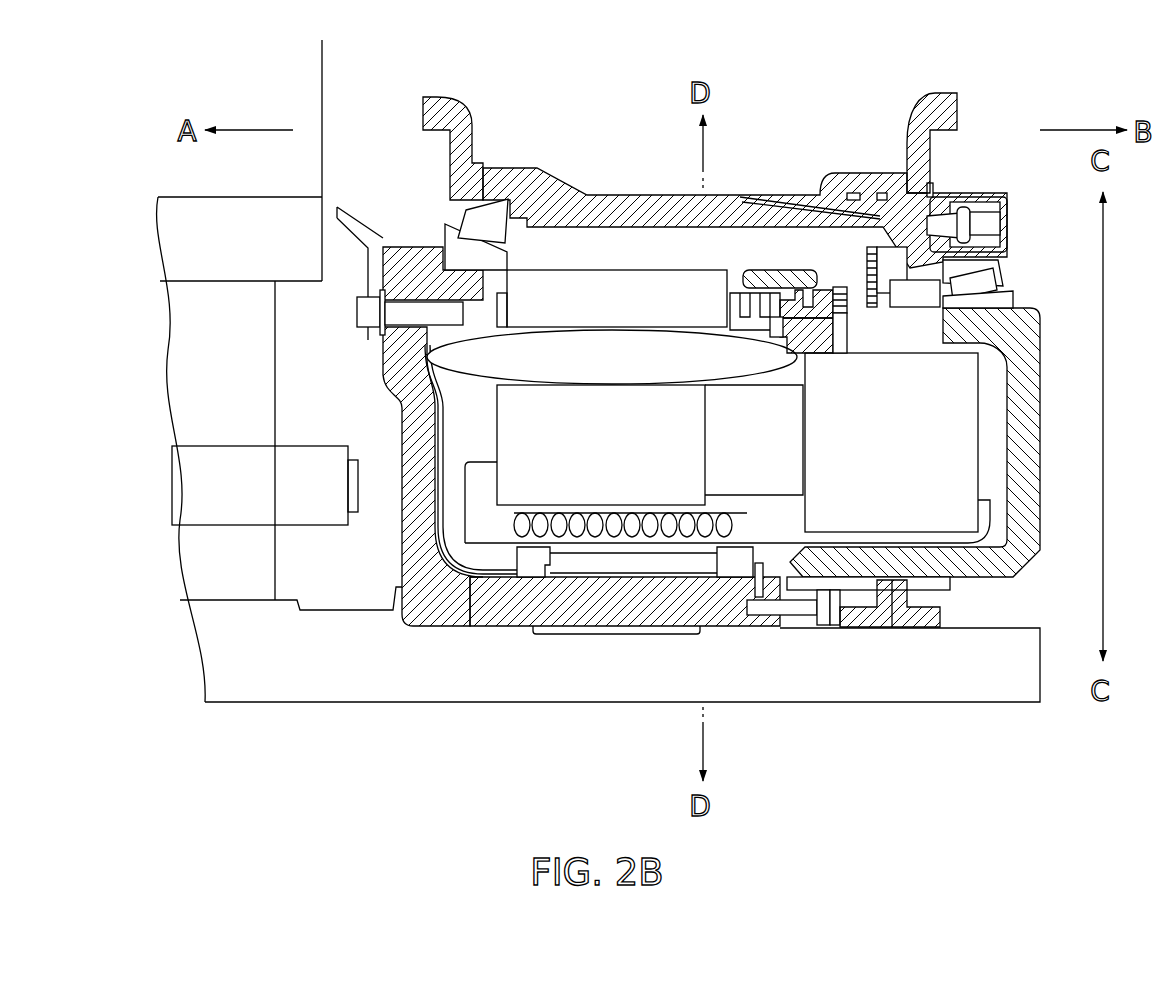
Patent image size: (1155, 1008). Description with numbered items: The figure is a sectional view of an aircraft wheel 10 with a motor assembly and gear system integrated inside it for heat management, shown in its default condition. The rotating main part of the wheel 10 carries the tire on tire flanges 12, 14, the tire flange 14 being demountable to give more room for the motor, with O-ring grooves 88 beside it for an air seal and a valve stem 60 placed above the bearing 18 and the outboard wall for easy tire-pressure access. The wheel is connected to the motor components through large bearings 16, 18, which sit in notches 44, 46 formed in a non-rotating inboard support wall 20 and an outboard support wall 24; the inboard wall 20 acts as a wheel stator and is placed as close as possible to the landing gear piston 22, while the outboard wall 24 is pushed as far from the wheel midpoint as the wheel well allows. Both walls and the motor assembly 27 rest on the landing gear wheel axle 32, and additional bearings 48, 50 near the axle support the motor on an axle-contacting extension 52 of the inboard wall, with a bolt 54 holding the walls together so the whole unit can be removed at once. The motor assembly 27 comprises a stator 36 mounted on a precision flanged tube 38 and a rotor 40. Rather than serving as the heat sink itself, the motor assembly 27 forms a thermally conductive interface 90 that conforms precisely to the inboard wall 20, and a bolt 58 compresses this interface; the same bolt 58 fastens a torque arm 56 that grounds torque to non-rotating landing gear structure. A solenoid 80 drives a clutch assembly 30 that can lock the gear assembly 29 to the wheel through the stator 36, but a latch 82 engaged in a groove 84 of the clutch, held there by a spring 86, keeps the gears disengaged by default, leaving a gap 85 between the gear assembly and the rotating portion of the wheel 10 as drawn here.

The wheel 10 is at (641, 182).
The tire flange 12 is at (436, 103).
The tire flange 14 is at (933, 108).
The bearing 16 is at (488, 232).
The bearing 18 is at (978, 282).
The inboard support wall 20 is at (412, 420).
The landing gear piston 22 is at (200, 388).
The outboard support wall 24 is at (1023, 464).
The motor assembly 27 is at (676, 260).
The gear assembly 29 is at (874, 466).
The clutch assembly 30 is at (846, 260).
The landing gear wheel axle 32 is at (333, 672).
The stator 36 is at (597, 369).
The flanged tube 38 is at (558, 292).
The rotor 40 is at (584, 462).
The notch 44 is at (467, 230).
The notch 46 is at (997, 290).
The bearing 48 is at (530, 568).
The bearing 50 is at (738, 568).
The axle-contacting extension 52 is at (620, 611).
The bolt 54 is at (827, 605).
The torque arm 56 is at (356, 208).
The bolt 58 is at (384, 313).
The valve stem 60 is at (1000, 222).
The solenoid 80 is at (746, 258).
The latch 82 is at (795, 272).
The groove 84 is at (812, 294).
The gap 85 is at (859, 305).
The spring 86 is at (598, 515).
The O-ring grooves 88 is at (880, 192).
The interface 90 is at (440, 450).